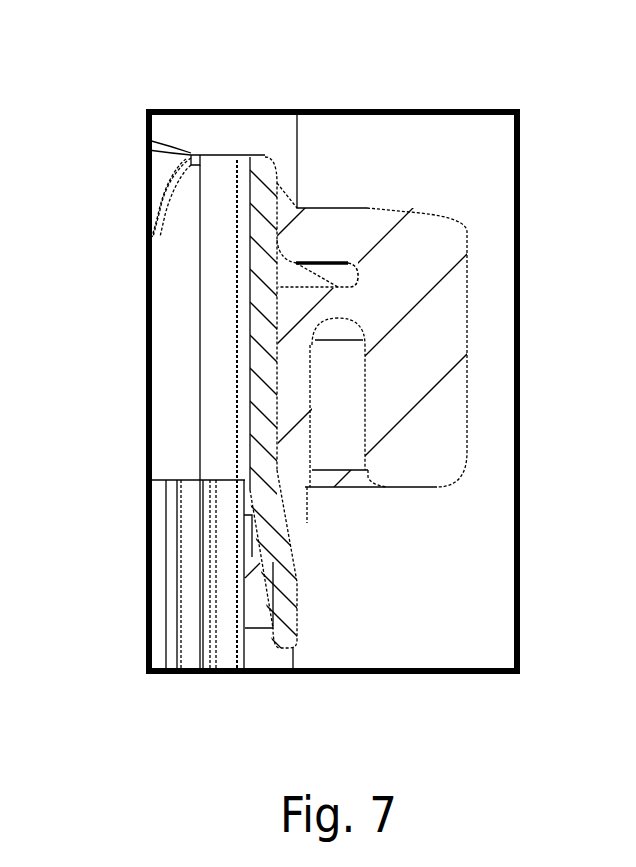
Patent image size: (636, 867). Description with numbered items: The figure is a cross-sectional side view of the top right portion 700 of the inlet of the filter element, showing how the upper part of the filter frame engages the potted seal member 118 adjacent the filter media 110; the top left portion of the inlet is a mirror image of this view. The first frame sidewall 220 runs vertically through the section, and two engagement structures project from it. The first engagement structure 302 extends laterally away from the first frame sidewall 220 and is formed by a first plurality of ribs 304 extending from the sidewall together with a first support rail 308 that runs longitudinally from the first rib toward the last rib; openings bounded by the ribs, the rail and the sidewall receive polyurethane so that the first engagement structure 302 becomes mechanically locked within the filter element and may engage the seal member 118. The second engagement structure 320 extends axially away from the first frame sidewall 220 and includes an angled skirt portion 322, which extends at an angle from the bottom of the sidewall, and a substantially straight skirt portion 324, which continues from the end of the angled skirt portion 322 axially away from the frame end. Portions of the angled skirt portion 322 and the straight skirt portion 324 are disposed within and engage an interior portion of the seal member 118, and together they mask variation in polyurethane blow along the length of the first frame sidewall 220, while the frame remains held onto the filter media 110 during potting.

The top right portion 700 is at (128, 75).
The first plurality of ribs 304 is at (313, 263).
The first support rail 308 is at (355, 270).
The first engagement structure 302 is at (291, 277).
The seal member 118 is at (437, 312).
The first frame sidewall 220 is at (240, 229).
The angled skirt portion 322 is at (282, 523).
The second engagement structure 320 is at (239, 538).
The filter media 110 is at (202, 588).
The substantially straight skirt portion 324 is at (290, 590).